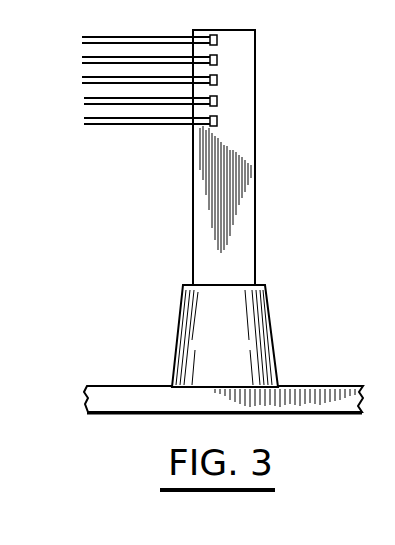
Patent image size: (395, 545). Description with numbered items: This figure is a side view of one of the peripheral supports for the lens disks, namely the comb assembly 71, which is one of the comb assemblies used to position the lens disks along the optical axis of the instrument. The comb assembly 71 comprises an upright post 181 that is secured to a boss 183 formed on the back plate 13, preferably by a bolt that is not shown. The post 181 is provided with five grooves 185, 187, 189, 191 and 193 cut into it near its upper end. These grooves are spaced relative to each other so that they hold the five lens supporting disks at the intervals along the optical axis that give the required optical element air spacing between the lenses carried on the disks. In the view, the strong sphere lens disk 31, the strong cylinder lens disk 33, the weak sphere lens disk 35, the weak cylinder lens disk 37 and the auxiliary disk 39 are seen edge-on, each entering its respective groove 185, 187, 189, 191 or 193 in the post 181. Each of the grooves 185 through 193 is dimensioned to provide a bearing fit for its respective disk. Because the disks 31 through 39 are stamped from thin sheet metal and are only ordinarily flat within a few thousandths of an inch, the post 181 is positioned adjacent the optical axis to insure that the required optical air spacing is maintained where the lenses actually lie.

The back plate 13 is at (330, 387).
The strong sphere lens disk 31 is at (82, 37).
The strong cylinder lens disk 33 is at (82, 57).
The weak sphere lens disk 35 is at (82, 78).
The weak cylinder lens disk 37 is at (85, 98).
The auxiliary disk 39 is at (86, 118).
The comb assembly 71 is at (162, 211).
The upright post 181 is at (240, 214).
The boss 183 is at (273, 318).
The groove 185 is at (217, 40).
The groove 187 is at (217, 60).
The groove 189 is at (217, 80).
The groove 191 is at (217, 101).
The groove 193 is at (217, 121).